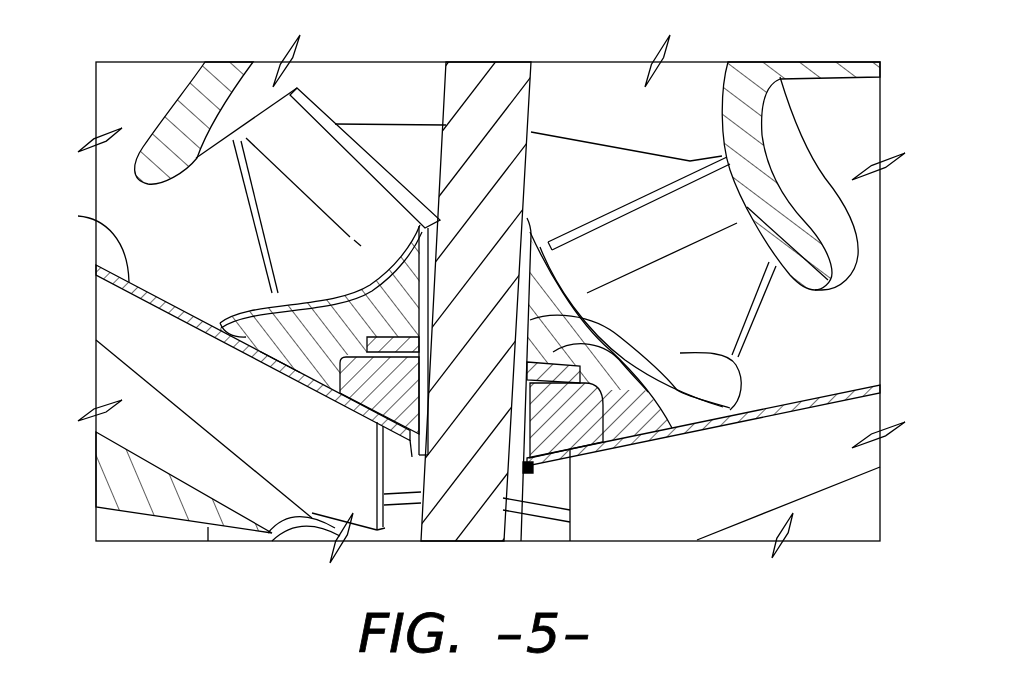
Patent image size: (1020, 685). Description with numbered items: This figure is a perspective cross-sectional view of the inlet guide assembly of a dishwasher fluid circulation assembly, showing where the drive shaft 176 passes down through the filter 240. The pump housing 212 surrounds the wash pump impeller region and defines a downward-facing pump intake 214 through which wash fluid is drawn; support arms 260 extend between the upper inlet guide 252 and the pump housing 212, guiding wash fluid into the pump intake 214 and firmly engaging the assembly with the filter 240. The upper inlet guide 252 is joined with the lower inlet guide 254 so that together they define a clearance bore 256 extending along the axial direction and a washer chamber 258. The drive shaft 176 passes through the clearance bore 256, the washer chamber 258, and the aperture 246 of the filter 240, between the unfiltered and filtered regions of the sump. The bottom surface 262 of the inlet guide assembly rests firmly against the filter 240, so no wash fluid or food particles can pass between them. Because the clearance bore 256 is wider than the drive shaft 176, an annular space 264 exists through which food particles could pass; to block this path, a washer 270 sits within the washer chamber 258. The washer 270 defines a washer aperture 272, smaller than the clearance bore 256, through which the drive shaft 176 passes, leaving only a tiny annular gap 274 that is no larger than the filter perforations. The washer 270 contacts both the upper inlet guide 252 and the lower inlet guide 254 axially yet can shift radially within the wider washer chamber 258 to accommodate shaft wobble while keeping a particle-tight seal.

The drive shaft 176 is at (481, 102).
The pump housing 212 is at (203, 100).
The pump intake 214 is at (400, 150).
The filter 240 is at (80, 216).
The aperture 246 is at (531, 473).
The upper inlet guide 252 is at (257, 353).
The lower inlet guide 254 is at (340, 383).
The clearance bore 256 is at (533, 225).
The washer chamber 258 is at (577, 432).
The support arms 260 is at (690, 197).
The bottom surface 262 is at (287, 380).
The annular space 264 is at (420, 457).
The washer 270 is at (600, 350).
The washer aperture 272 is at (590, 330).
The annular gap 274 is at (407, 387).